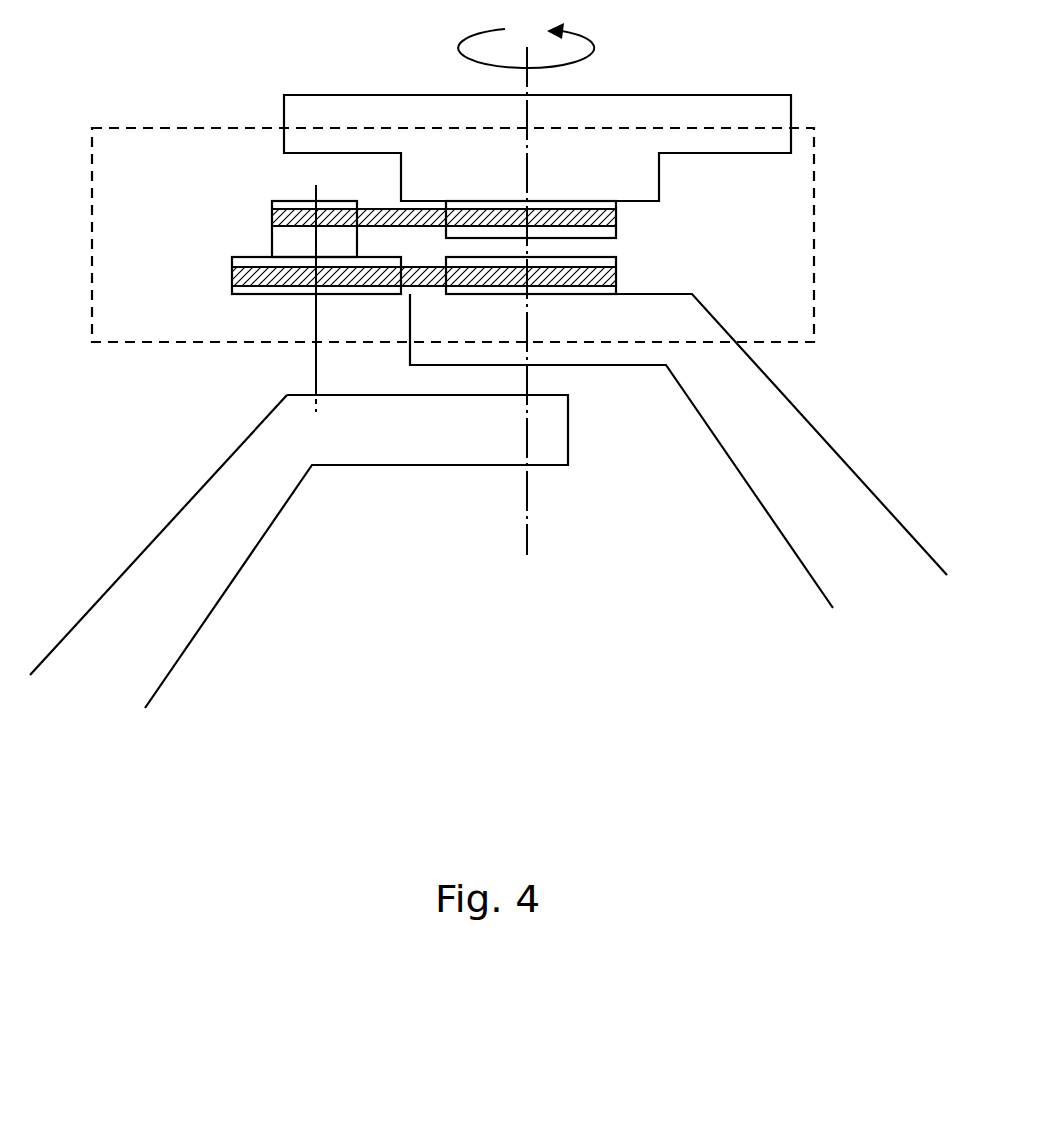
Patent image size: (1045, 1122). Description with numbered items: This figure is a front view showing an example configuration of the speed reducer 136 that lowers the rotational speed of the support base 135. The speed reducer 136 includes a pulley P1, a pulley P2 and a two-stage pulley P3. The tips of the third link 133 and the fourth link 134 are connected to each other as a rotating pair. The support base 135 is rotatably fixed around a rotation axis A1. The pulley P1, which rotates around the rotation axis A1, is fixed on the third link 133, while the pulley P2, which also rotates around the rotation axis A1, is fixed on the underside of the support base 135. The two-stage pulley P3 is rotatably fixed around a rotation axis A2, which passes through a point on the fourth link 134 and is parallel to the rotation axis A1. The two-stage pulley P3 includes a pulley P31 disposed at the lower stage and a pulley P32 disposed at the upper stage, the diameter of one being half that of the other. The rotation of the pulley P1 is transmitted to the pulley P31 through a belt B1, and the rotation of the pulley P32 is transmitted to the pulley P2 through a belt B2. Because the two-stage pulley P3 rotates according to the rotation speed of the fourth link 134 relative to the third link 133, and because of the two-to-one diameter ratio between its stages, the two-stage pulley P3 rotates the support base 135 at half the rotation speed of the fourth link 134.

The third link 133 is at (782, 393).
The fourth link 134 is at (202, 488).
The support base 135 is at (791, 111).
The speed reducer 136 is at (195, 128).
The pulley P1 is at (617, 263).
The pulley P2 is at (617, 228).
The two-stage pulley P3 is at (255, 262).
The pulley P31 is at (232, 262).
The pulley P32 is at (272, 240).
The belt B1 is at (428, 268).
The belt B2 is at (397, 208).
The rotation axis A1 is at (527, 533).
The rotation axis A2 is at (317, 327).